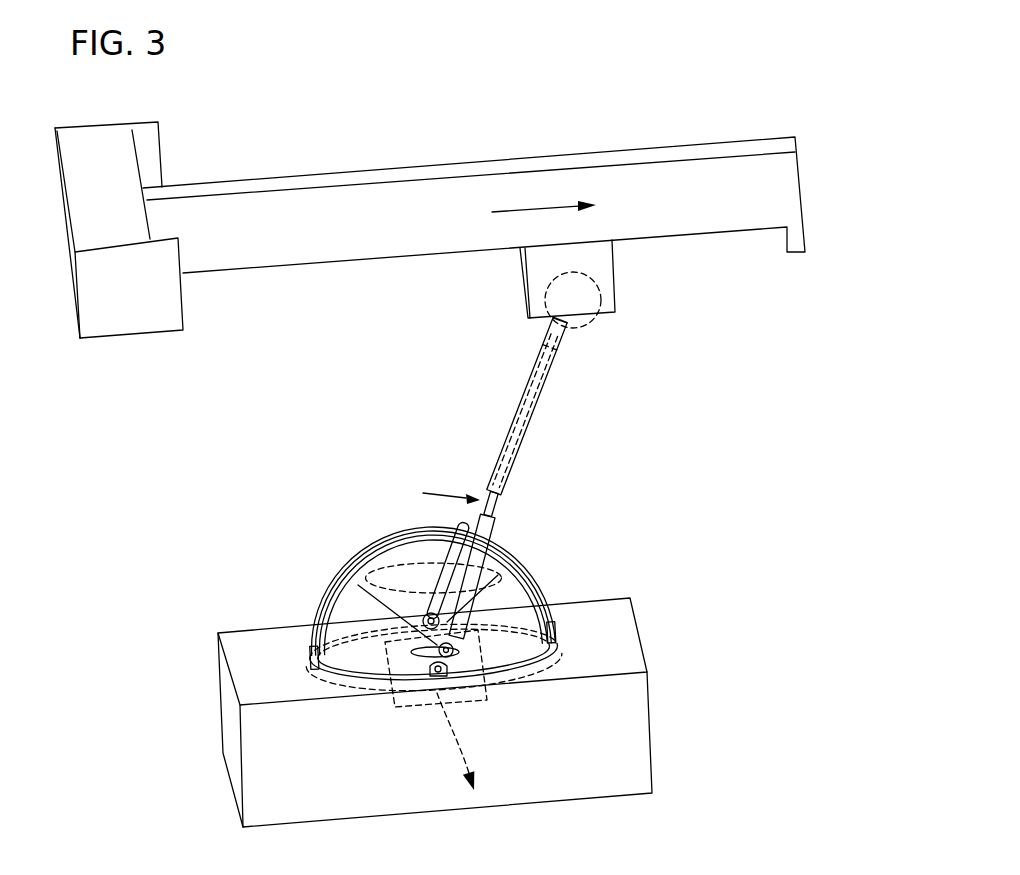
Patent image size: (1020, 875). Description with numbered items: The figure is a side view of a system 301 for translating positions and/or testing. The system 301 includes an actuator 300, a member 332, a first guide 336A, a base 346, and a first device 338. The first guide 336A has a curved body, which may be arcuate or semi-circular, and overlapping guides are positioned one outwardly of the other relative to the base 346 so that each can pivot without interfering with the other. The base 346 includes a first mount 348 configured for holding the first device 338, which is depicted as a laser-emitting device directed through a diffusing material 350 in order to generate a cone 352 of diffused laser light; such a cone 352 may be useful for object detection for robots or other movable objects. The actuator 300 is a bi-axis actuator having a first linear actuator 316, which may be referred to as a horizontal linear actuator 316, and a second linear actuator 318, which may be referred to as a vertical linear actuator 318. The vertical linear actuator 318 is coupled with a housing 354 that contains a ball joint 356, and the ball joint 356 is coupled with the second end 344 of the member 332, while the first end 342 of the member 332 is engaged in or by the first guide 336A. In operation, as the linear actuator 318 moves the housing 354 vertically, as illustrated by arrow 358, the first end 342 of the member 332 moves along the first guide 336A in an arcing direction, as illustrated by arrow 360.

The actuator 300 is at (94, 354).
The system 301 is at (640, 86).
The first linear actuator 316 is at (137, 328).
The second linear actuator 318 is at (293, 202).
The member 332 is at (532, 427).
The first guide 336A is at (525, 590).
The first device 338 is at (342, 581).
The first end 342 is at (477, 533).
The second end 344 is at (546, 334).
The base 346 is at (648, 692).
The first mount 348 is at (487, 700).
The diffusing material 350 is at (417, 662).
The cone 352 is at (397, 568).
The housing 354 is at (615, 270).
The ball joint 356 is at (595, 315).
The arrow 358 is at (533, 208).
The arrow 360 is at (440, 493).